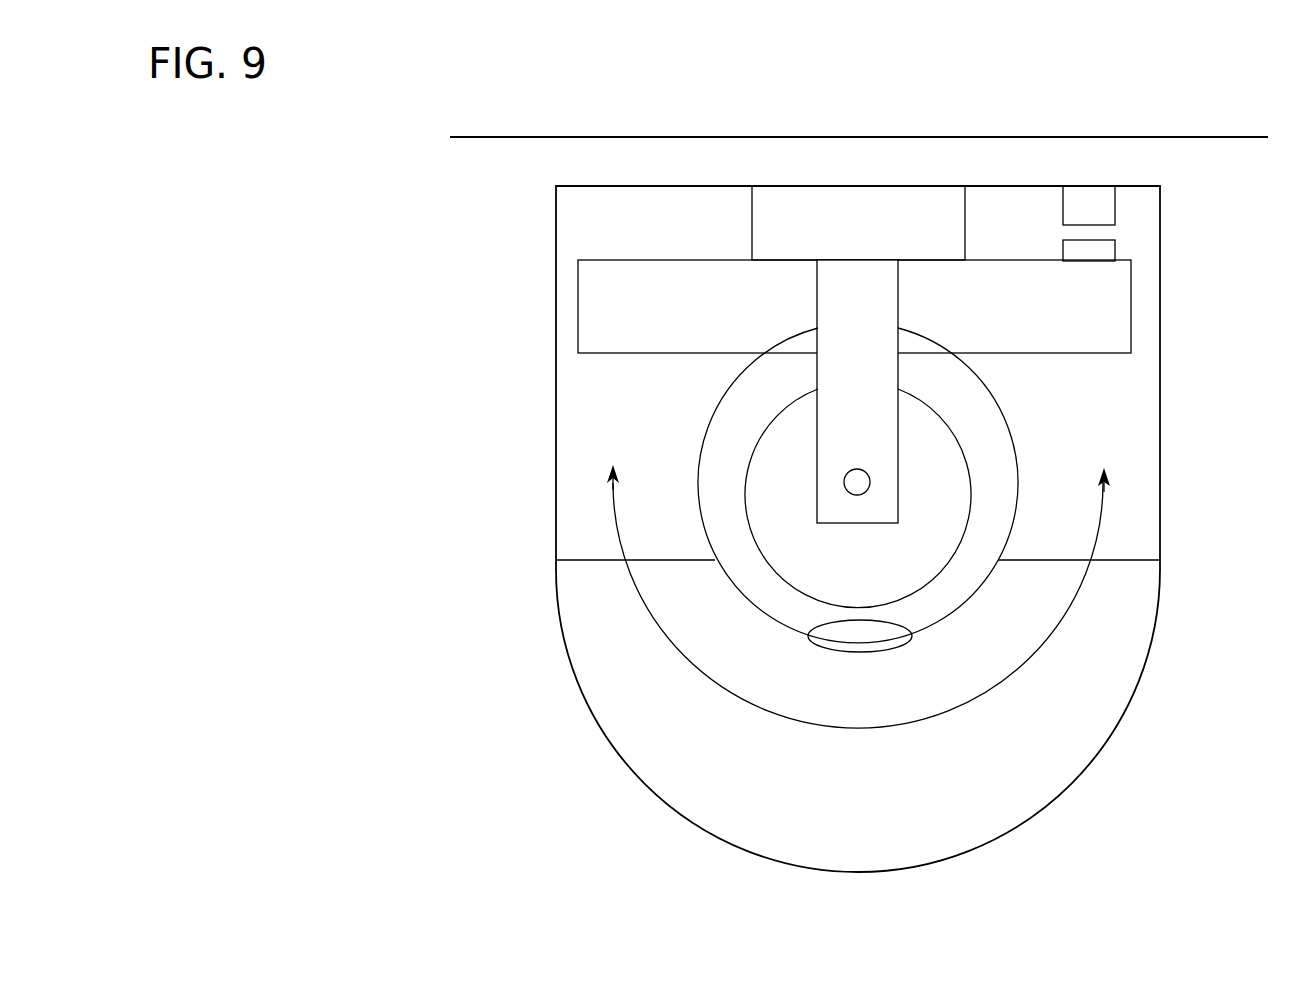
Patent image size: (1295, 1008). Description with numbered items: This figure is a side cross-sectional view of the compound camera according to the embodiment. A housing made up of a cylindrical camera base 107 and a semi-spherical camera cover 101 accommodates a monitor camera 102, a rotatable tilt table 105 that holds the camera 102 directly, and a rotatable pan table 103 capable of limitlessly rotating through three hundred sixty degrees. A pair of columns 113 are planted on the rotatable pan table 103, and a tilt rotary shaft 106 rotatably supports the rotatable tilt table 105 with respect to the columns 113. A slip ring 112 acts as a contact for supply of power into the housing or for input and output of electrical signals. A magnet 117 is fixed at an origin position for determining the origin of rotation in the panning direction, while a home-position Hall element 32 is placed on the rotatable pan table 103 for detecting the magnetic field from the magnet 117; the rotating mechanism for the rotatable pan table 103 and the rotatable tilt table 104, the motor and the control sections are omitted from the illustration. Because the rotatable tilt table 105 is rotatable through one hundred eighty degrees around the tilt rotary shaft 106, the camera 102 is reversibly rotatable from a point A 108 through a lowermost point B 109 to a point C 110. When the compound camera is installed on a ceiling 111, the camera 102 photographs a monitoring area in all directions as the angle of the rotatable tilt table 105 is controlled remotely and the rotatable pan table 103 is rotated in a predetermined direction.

The semi-spherical camera cover 101 is at (598, 767).
The monitor camera 102 is at (901, 663).
The rotatable pan table 103 is at (688, 291).
The rotatable tilt table 104 is at (1054, 641).
The rotatable tilt table 105 is at (1020, 423).
The tilt rotary shaft 106 is at (870, 467).
The cylindrical camera base 107 is at (1165, 392).
The point A 108 is at (600, 457).
The lowermost point B 109 is at (859, 735).
The point C 110 is at (1123, 456).
The ceiling 111 is at (859, 118).
The slip ring 112 is at (846, 211).
The columns 113 is at (853, 293).
The magnet 117 is at (1115, 207).
The home-position Hall element 32 is at (1115, 247).